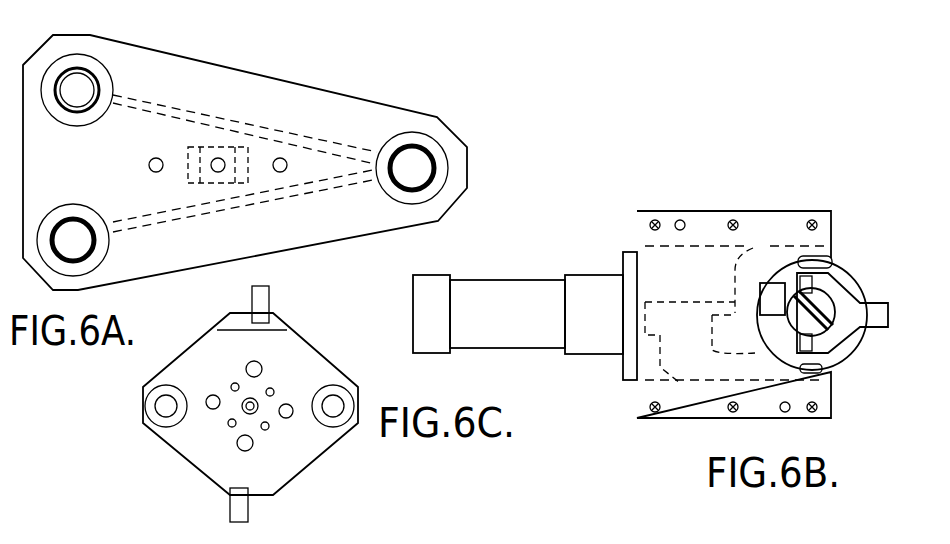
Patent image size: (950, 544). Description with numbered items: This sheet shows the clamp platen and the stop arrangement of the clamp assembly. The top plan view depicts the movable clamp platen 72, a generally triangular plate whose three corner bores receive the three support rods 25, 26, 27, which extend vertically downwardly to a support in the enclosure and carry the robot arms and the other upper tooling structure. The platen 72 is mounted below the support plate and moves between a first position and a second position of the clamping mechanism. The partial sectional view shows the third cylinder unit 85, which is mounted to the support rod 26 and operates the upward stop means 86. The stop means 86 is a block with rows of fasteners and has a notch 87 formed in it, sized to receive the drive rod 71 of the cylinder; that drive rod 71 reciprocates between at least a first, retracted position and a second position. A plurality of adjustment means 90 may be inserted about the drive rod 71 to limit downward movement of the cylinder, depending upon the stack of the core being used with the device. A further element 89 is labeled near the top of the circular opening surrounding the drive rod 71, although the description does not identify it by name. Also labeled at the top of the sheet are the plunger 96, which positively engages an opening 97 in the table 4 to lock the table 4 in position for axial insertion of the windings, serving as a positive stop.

In FIG. 6A, the table 4 is at (457, 0).
In FIG. 6A, the support rod 25 is at (414, 173).
In FIG. 6A, the support rod 26 is at (76, 253).
In FIG. 6A, the support rod 27 is at (76, 78).
In FIG. 6A, the movable clamp platen 72 is at (302, 110).
In FIG. 6A, the plunger 96 is at (258, 0).
In FIG. 6A, the opening 97 is at (318, 0).
In FIG. 6B, the third cylinder unit 85 is at (507, 313).
In FIG. 6B, the upward stop means 86 is at (760, 211).
In FIG. 6B, the notch 87 is at (785, 312).
In FIG. 6B, the clamp ring 89 is at (840, 258).
In FIG. 6B, the drive rod 71 is at (818, 291).
In FIG. 6B, the adjustment means 90 is at (848, 322).